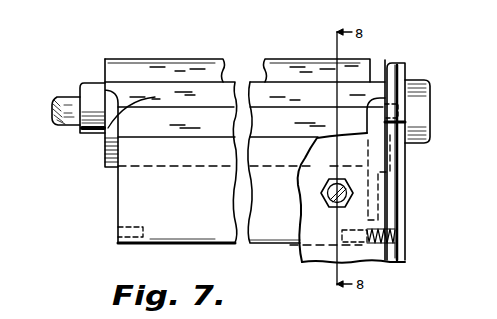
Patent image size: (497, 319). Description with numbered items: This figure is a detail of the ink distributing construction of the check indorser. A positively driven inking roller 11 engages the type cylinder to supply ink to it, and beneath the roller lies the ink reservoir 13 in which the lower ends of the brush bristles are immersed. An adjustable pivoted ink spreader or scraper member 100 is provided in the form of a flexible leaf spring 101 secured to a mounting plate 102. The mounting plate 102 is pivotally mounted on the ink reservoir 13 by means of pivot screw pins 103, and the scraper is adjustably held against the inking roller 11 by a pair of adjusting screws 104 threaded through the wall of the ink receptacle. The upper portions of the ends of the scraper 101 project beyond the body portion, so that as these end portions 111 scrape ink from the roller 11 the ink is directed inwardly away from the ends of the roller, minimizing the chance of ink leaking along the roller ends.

The inking roller 11 is at (210, 63).
The reservoir 13 is at (390, 203).
The ink spreader or scraper member 100 is at (125, 188).
The flexible leaf spring 101 is at (85, 140).
The mounting plate 102 is at (127, 208).
The pivot screw pins 103 is at (358, 242).
The adjusting screws 104 is at (330, 200).
The end portions 111 is at (383, 90).